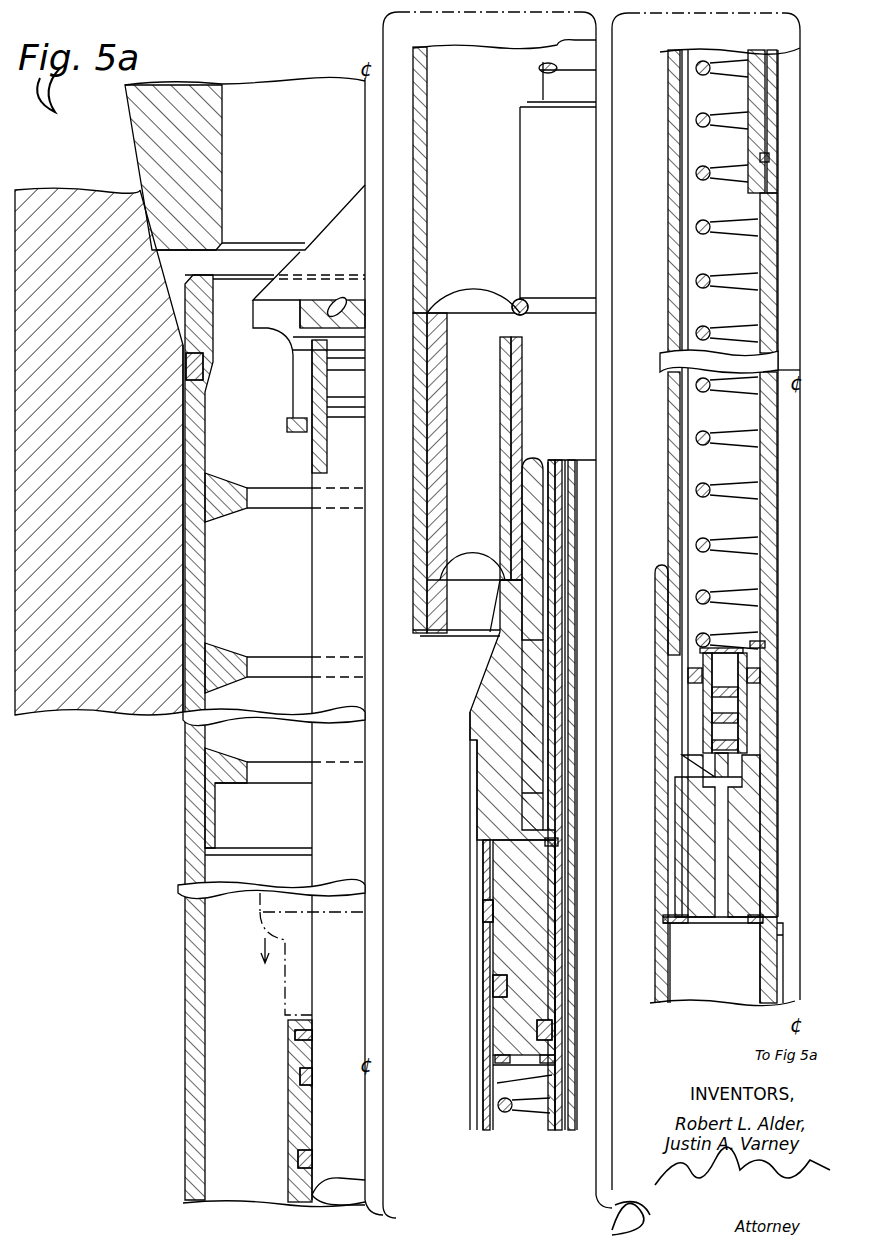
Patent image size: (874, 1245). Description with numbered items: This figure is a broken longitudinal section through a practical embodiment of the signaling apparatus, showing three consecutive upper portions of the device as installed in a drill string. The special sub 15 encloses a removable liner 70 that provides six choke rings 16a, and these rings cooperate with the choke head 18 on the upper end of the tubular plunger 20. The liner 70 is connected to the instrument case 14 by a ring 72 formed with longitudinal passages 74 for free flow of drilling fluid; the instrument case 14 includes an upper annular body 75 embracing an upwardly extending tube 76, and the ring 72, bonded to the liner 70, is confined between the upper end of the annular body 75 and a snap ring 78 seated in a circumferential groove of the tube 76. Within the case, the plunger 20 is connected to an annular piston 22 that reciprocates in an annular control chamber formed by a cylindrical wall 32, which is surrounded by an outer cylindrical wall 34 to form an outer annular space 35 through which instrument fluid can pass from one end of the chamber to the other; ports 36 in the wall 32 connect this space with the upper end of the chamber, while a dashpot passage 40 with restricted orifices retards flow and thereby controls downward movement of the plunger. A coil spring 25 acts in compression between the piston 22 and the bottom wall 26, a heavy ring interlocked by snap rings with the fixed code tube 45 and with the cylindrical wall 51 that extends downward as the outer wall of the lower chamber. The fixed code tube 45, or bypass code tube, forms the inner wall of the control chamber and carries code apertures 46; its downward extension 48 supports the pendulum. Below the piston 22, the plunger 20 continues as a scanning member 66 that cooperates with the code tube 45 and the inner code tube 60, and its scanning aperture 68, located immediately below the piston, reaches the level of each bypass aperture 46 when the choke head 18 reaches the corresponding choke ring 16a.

The instrument case 14 is at (516, 179).
The special sub 15 is at (130, 718).
The choke rings 16a is at (262, 459).
The choke head 18 is at (330, 226).
The tubular plunger 20 is at (312, 606).
The annular piston 22 is at (535, 958).
The coil spring 25 is at (505, 1112).
The bottom wall 26 is at (692, 878).
The cylindrical wall 32 is at (488, 1017).
The outer cylindrical wall 34 is at (290, 1148).
The outer annular space 35 is at (478, 945).
The ports 36 is at (485, 913).
The dashpot passage 40 is at (700, 703).
The fixed code tube 45 is at (550, 493).
The code apertures 46 is at (767, 158).
The downward extension 48 is at (763, 950).
The cylindrical wall 51 is at (663, 847).
The inner code tube 60 is at (580, 462).
The scanning member 66 is at (757, 97).
The scanning aperture 68 is at (497, 1083).
The removable liner 70 is at (197, 580).
The ring 72 is at (435, 388).
The longitudinal passages 74 is at (455, 435).
The upper annular body 75 is at (495, 680).
The upwardly extending tube 76 is at (547, 220).
The snap ring 78 is at (515, 302).